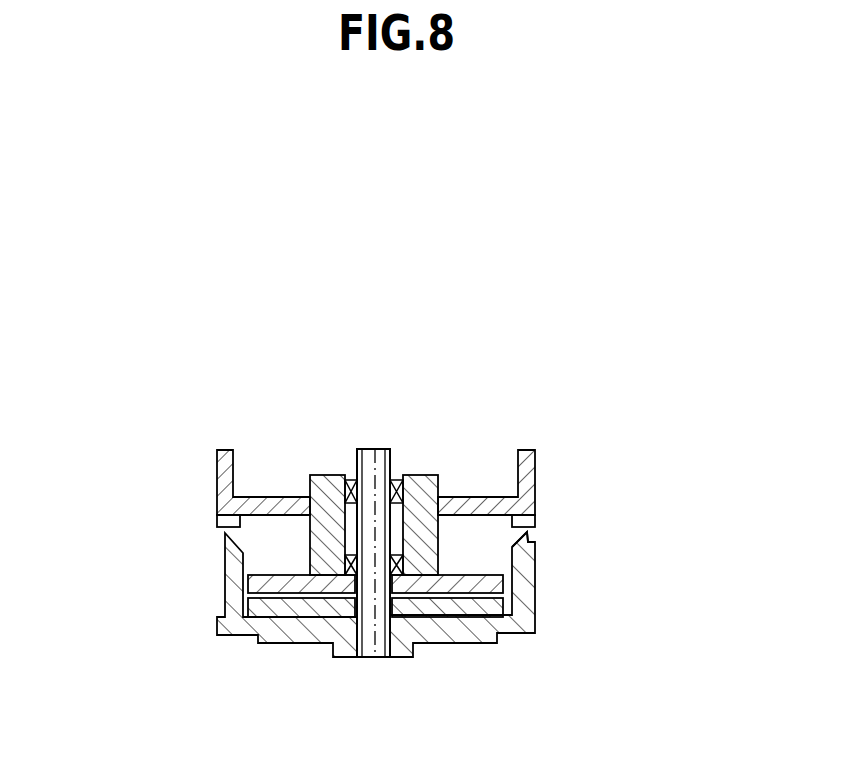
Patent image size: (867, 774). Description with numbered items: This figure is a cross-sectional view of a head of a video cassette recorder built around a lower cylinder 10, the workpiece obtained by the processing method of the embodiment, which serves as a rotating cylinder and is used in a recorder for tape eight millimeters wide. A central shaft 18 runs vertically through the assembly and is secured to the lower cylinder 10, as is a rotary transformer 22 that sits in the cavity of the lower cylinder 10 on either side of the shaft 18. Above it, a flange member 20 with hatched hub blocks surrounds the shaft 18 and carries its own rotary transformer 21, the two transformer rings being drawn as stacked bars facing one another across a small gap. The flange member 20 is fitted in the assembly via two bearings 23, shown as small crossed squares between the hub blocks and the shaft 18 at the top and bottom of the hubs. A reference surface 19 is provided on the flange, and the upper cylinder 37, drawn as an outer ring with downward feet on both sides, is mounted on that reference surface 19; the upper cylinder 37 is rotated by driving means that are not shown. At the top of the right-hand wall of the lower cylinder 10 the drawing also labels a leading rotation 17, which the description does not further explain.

The lower cylinder 10 is at (225, 595).
The leading rotation 17 is at (530, 538).
The shaft 18 is at (372, 449).
The reference surface 19 is at (413, 498).
The flange member 20 is at (432, 540).
The rotary transformer 21 is at (500, 578).
The rotary transformer 22 is at (488, 604).
The bearings 23 is at (349, 480).
The upper cylinder 37 is at (217, 483).